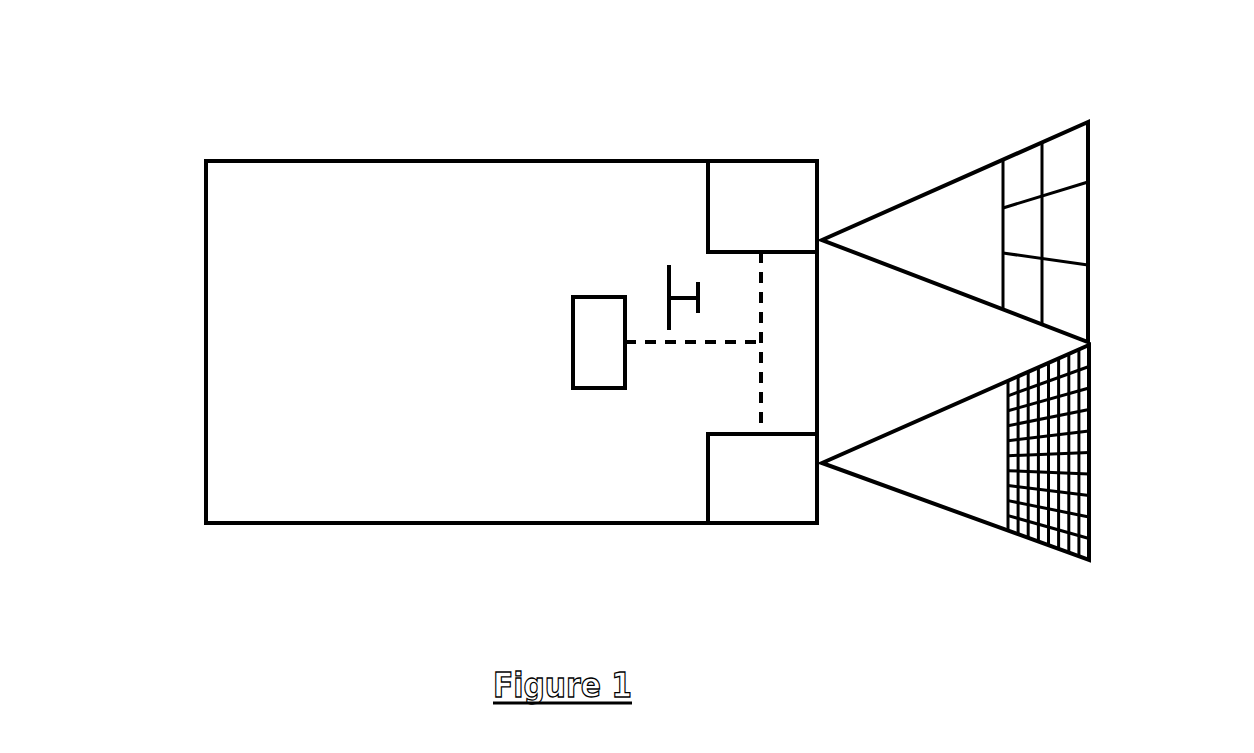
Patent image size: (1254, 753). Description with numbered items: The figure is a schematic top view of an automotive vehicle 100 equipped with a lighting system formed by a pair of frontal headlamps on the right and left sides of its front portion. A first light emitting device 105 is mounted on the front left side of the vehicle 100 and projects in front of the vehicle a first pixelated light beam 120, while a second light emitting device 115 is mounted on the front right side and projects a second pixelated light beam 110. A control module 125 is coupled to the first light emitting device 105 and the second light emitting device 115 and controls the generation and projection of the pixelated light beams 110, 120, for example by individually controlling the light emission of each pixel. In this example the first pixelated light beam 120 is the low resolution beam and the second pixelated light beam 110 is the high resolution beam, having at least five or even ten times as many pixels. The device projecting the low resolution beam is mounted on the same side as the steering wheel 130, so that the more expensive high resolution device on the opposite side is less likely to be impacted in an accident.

The automotive vehicle 100 is at (419, 148).
The first light emitting device 105 is at (781, 170).
The second pixelated light beam 110 is at (1093, 458).
The second light emitting device 115 is at (775, 515).
The first pixelated light beam 120 is at (1085, 132).
The control module 125 is at (604, 299).
The steering wheel 130 is at (684, 267).